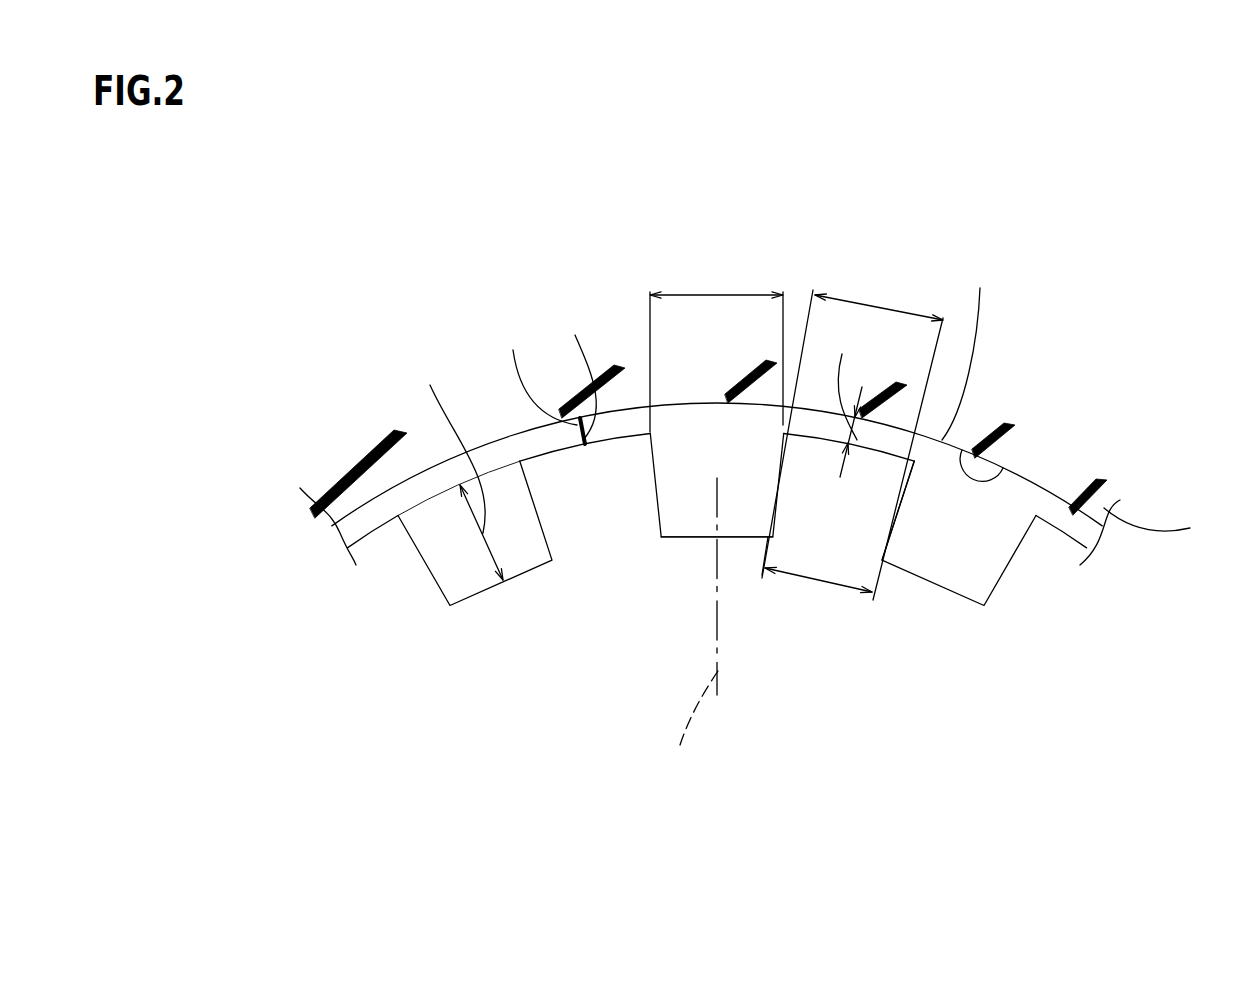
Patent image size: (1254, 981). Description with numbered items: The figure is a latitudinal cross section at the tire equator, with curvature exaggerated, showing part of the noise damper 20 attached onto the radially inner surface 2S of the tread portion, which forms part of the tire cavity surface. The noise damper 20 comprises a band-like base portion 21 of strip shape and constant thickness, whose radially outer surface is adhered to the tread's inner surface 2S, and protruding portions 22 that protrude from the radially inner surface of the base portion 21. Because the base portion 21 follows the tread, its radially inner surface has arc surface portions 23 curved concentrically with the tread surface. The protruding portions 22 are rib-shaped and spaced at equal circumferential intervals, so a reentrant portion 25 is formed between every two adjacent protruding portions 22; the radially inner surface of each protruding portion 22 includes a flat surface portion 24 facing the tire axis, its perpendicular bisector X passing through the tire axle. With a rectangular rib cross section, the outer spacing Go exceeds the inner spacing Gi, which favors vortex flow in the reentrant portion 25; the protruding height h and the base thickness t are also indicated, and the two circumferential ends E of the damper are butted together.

The noise damper 20 is at (756, 516).
The base portion 21 is at (622, 425).
The protruding portion 22 is at (717, 520).
The arc surface portion 23 is at (883, 453).
The flat surface portion 24 is at (687, 537).
The reentrant portion 25 is at (612, 512).
The radially inner surface of the tread portion 2S is at (1003, 468).